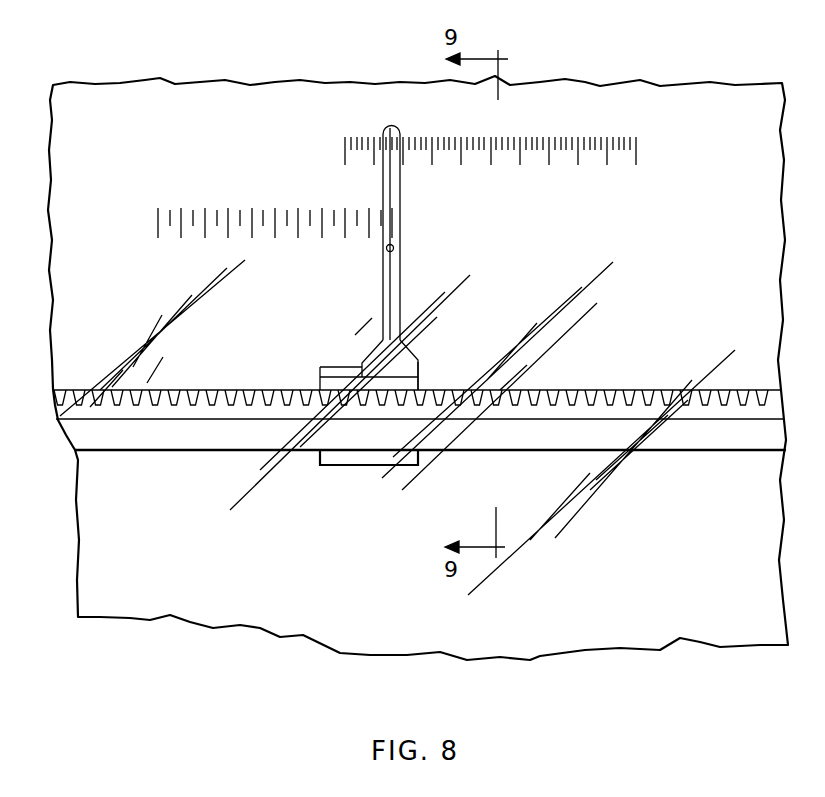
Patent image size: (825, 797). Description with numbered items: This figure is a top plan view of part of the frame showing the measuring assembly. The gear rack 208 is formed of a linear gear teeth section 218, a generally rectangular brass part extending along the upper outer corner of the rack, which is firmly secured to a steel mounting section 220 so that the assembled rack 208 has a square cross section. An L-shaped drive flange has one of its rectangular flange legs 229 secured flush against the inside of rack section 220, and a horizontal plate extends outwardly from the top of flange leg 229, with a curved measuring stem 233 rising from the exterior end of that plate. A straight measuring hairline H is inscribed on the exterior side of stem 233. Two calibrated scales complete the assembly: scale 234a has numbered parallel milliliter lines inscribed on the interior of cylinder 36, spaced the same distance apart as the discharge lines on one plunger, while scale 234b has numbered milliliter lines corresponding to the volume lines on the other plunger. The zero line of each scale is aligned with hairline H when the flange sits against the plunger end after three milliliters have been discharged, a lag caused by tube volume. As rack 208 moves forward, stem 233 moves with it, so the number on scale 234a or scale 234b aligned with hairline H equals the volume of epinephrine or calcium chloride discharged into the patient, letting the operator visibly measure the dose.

The cylinder 36 is at (673, 622).
The linear gear teeth section 218 is at (620, 398).
The mounting section 220 is at (687, 442).
The flange leg 229 is at (365, 458).
The gear rack 208 is at (498, 460).
The measuring stem 233 is at (388, 322).
The measuring hairline H is at (392, 280).
The measuring scale 234a is at (148, 228).
The measuring scale 234b is at (326, 168).